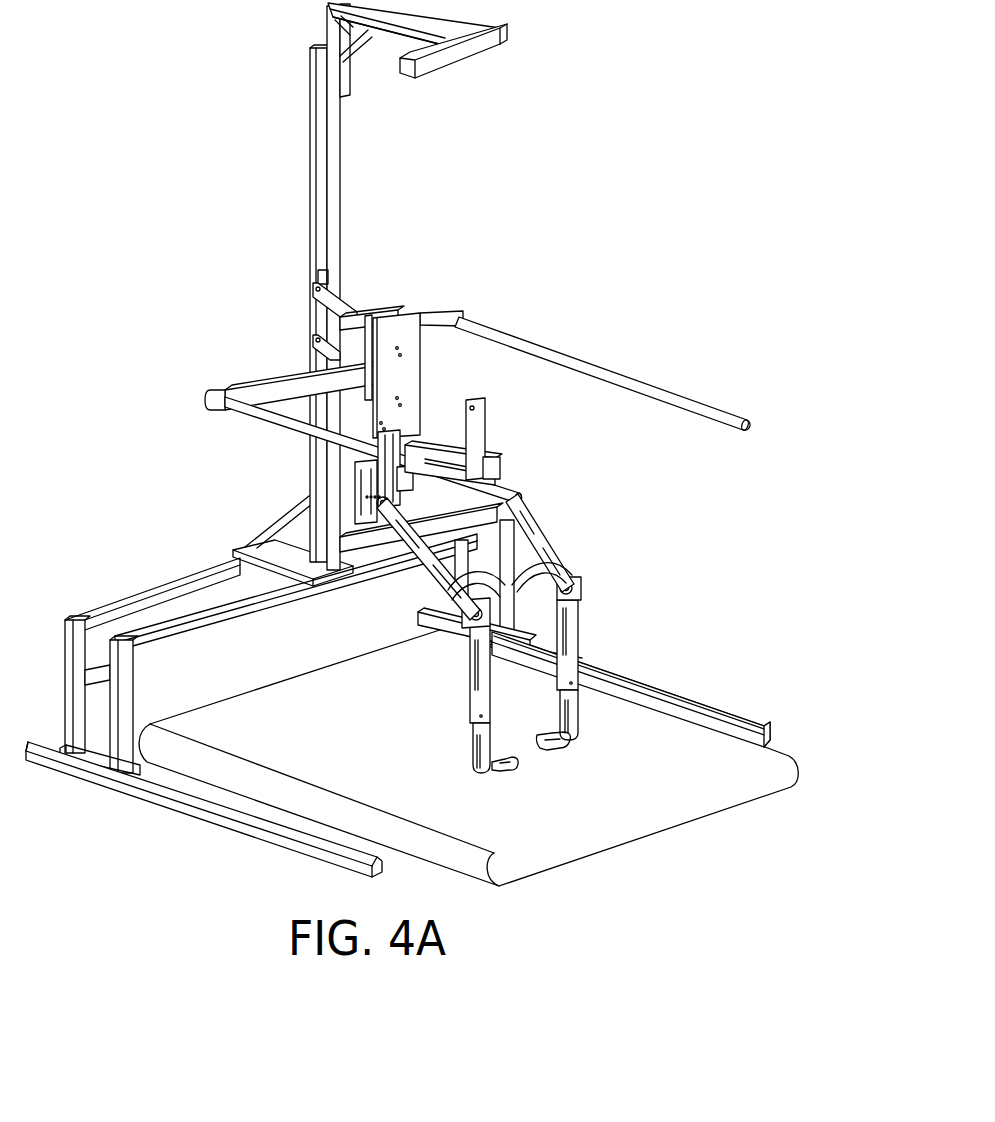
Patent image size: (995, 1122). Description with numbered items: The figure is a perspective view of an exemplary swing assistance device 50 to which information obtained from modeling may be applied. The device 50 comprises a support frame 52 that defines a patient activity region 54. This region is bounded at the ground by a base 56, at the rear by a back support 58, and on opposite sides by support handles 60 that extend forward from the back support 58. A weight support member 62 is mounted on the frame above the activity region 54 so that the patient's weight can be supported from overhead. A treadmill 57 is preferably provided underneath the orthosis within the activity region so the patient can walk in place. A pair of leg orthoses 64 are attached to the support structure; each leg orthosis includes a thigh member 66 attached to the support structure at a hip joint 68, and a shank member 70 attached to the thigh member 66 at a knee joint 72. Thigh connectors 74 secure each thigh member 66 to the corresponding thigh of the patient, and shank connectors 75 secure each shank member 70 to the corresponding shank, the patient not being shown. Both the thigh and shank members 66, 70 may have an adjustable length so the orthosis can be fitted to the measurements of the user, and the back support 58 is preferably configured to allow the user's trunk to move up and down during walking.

The device 50 is at (412, 444).
The support frame 52 is at (407, 686).
The patient activity region 54 is at (477, 389).
The base 56 is at (217, 817).
The treadmill 57 is at (277, 713).
The back support 58 is at (410, 352).
The support handles 60 is at (667, 391).
The weight support member 62 is at (457, 55).
The leg orthosis 64 is at (628, 671).
The thigh member 66 is at (400, 540).
The hip joint 68 is at (487, 451).
The shank member 70 is at (477, 678).
The knee joint 72 is at (433, 640).
The thigh connectors 74 is at (503, 597).
The shank connectors 75 is at (495, 768).